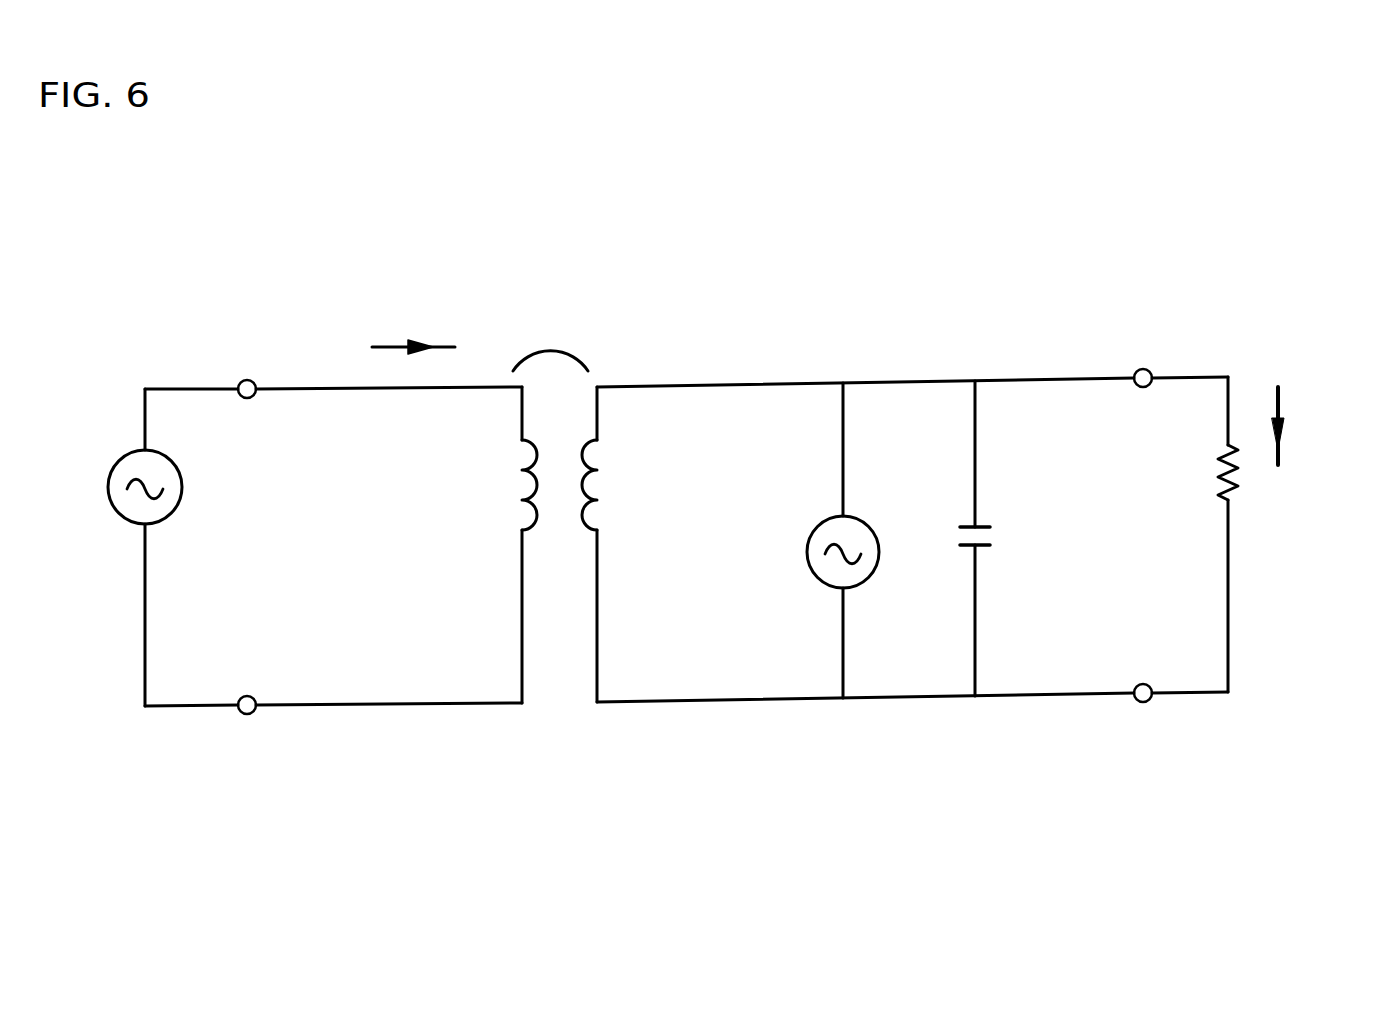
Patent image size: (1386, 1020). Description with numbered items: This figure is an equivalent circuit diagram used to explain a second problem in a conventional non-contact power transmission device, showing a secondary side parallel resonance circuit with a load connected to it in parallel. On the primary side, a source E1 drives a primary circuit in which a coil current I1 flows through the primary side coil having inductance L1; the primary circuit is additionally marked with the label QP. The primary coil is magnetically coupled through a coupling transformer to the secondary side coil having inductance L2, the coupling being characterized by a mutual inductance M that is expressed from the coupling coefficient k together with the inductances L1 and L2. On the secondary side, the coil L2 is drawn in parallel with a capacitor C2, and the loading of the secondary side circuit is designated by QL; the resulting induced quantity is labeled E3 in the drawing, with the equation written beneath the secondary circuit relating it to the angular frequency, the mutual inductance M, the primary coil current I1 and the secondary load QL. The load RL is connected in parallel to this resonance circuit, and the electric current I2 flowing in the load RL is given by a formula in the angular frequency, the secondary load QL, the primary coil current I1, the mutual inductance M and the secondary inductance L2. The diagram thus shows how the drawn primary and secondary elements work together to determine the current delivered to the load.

The primary-side AC voltage source E1 is at (123, 456).
The coil current of the primary side circuit I1 is at (413, 322).
The primary coil quality factor QP is at (383, 523).
The inductance of the primary side coil L1 is at (497, 485).
The mutual inductance of the coupling transformer M is at (550, 326).
The coupling coefficient k is at (547, 783).
The inductance of the secondary side coil L2 is at (628, 485).
The load of the secondary side circuit QL is at (693, 434).
The induced secondary voltage source E3 = ω×M×I1×QL E3 is at (939, 571).
The secondary resonance capacitor C2 is at (1001, 538).
The load RL is at (1297, 479).
The electric current flowing in the load I2 is at (1303, 427).